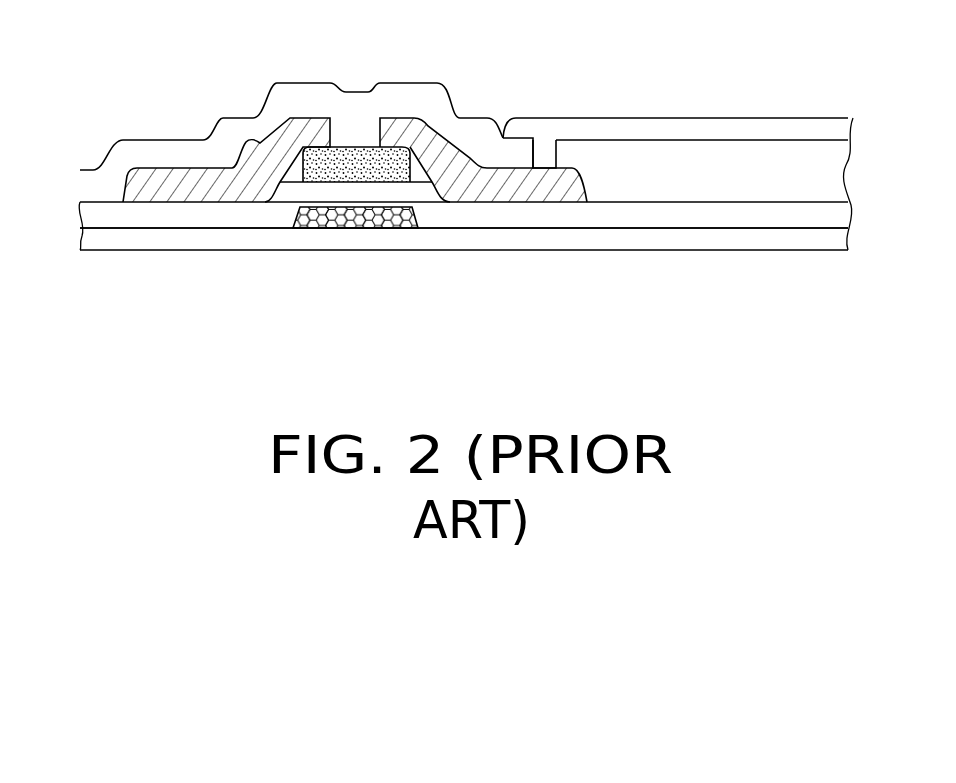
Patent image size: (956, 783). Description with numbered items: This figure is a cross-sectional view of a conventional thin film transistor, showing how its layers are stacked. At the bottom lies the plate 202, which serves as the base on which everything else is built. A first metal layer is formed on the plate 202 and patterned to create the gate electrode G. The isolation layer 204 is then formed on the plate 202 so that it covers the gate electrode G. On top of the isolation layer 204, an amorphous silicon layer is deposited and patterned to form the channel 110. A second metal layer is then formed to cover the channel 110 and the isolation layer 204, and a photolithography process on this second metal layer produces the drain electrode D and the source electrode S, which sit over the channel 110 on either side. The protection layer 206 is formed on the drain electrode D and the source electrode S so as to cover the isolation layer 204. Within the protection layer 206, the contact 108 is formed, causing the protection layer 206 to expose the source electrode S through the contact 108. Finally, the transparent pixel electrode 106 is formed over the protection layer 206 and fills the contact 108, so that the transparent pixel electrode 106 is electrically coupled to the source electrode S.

The plate 202 is at (795, 240).
The isolation layer 204 is at (762, 217).
The protection layer 206 is at (157, 152).
The transparent pixel electrode 106 is at (658, 130).
The contact 108 is at (545, 150).
The channel 110 is at (397, 173).
The drain electrode D is at (214, 190).
The gate electrode G is at (355, 228).
The source electrode S is at (523, 187).